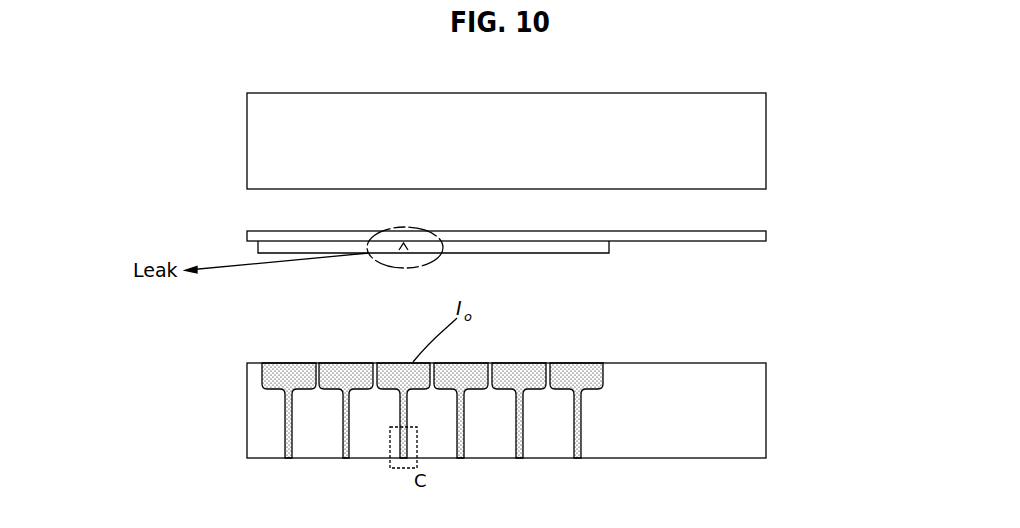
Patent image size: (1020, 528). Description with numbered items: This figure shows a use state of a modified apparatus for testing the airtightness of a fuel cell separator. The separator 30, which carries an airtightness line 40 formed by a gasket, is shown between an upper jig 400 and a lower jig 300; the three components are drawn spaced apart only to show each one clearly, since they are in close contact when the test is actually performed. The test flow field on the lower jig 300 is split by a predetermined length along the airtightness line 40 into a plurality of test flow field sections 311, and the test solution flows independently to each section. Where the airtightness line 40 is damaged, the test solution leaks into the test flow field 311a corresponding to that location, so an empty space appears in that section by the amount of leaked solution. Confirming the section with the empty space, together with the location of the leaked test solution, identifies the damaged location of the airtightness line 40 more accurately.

The upper jig 400 is at (753, 142).
The separator 30 is at (763, 234).
The airtightness line 40 is at (609, 243).
The lower jig 300 is at (553, 375).
The test flow field sections 311 is at (568, 377).
The test flow field corresponding to the damaged location 311a is at (407, 375).